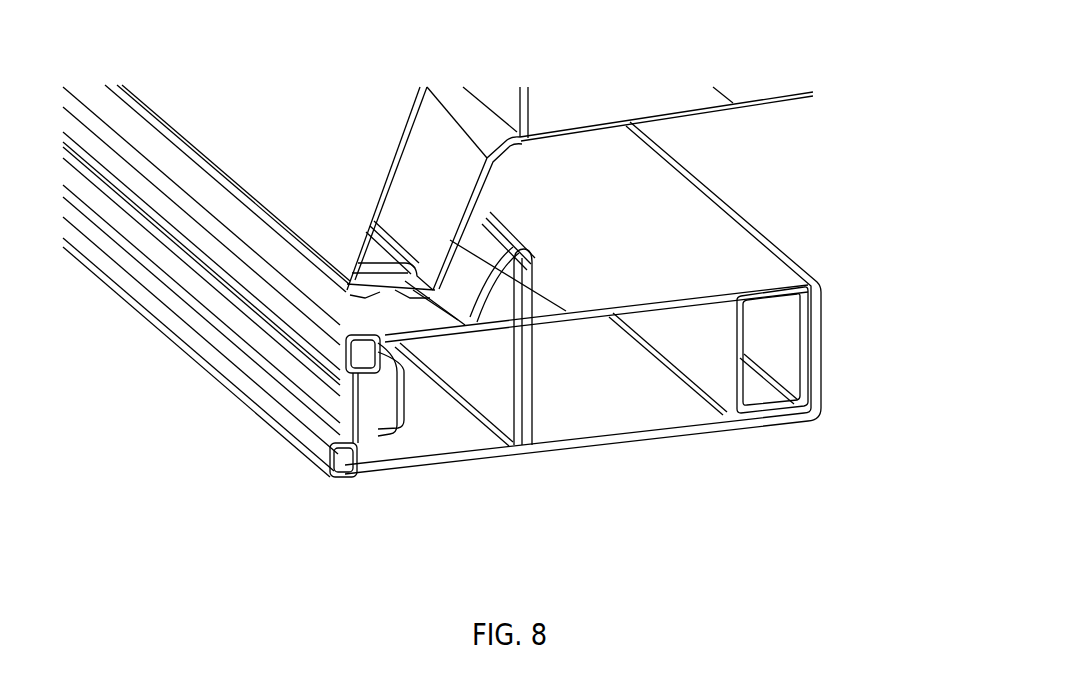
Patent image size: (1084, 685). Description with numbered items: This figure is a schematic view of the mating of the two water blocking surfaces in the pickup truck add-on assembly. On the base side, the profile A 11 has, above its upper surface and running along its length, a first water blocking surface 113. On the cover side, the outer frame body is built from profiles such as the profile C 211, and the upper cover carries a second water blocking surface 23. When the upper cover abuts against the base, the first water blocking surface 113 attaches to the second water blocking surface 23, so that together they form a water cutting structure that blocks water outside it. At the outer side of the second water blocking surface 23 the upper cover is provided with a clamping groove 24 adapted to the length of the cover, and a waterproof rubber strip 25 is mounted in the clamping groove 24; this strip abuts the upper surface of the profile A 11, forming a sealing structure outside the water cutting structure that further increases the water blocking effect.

The profile A 11 is at (488, 220).
The second water blocking surface 23 is at (597, 378).
The clamping groove 24 is at (386, 304).
The waterproof rubber strip 25 is at (352, 307).
The first water blocking surface 113 is at (457, 315).
The profile C 211 is at (456, 101).